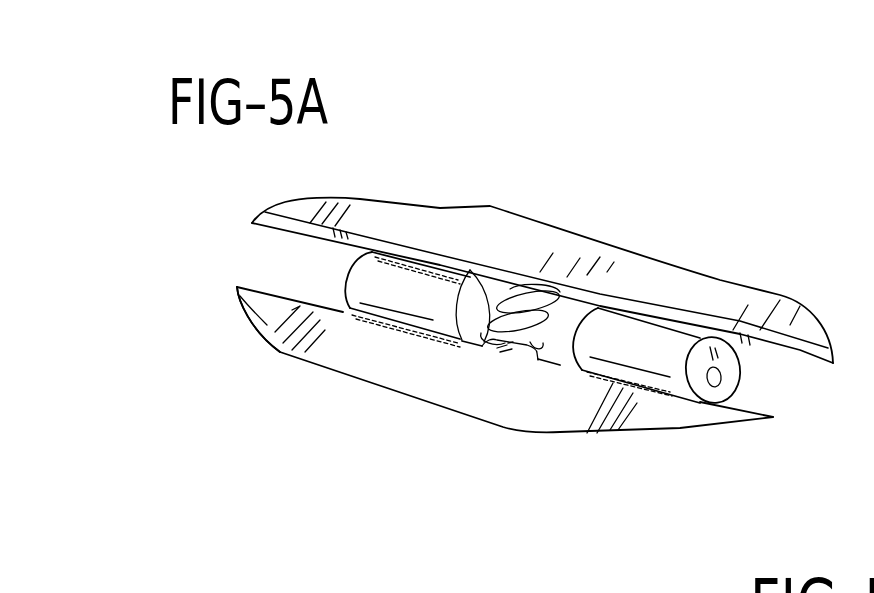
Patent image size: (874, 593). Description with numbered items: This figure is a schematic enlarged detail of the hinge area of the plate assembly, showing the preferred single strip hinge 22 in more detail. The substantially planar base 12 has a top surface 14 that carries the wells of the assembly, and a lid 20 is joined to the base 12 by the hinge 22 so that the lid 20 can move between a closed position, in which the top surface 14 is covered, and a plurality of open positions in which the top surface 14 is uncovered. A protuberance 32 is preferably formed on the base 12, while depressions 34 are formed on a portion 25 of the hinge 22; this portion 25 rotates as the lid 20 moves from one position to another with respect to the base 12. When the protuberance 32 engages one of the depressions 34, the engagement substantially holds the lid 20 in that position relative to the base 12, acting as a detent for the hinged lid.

The base 12 is at (378, 391).
The top surface 14 is at (237, 288).
The lid 20 is at (398, 205).
The hinge 22 is at (648, 308).
The portion of hinge 25 is at (577, 303).
The protuberance 32 is at (508, 350).
The depressions 34 is at (487, 262).